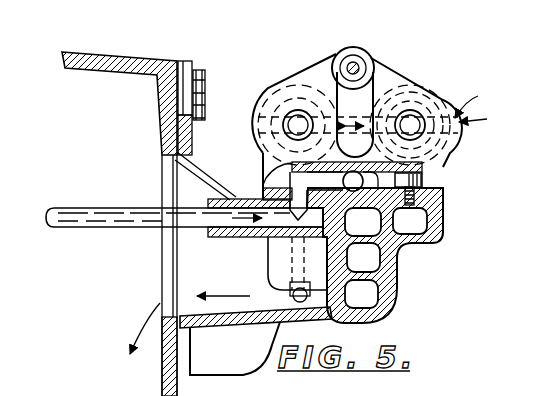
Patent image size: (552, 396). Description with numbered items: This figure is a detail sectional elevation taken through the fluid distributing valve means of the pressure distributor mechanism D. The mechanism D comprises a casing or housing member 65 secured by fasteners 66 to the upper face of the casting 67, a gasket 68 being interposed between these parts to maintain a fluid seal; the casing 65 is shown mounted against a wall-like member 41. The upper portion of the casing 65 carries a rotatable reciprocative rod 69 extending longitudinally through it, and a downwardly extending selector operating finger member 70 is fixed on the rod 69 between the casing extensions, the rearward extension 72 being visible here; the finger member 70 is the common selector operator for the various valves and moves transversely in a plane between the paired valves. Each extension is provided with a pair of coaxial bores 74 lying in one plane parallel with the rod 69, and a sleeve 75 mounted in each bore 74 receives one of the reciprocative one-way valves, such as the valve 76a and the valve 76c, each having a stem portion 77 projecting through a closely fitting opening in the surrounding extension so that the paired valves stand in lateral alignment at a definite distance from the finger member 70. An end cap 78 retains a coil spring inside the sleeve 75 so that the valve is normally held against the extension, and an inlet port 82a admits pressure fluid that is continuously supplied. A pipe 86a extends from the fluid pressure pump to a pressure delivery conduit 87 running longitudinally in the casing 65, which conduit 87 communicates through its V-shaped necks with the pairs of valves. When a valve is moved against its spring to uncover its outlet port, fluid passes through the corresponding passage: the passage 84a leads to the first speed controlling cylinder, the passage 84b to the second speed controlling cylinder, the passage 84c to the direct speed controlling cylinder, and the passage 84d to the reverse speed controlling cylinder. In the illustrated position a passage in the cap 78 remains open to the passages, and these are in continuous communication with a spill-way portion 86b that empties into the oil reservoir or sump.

The wall bracket 41 is at (138, 58).
The pipe 86a is at (268, 153).
The rearward extension 72 is at (382, 70).
The rotatable reciprocative rod 69 is at (353, 64).
The selector operating finger member 70 is at (340, 62).
The stem portion 77 is at (300, 112).
The reciprocative one-way valve 76a is at (288, 127).
The end cap 78 is at (283, 90).
The coaxial bores 74 is at (260, 117).
The sleeve 75 is at (458, 148).
The reciprocative one-way valve 76c is at (420, 118).
The right disc circle 82a is at (408, 82).
The pressure distributor mechanism D is at (473, 102).
The casing 65 is at (482, 115).
The pressure delivery conduit 87 is at (358, 180).
The passage 84b is at (345, 214).
The fasteners 66 is at (425, 182).
The gasket 68 is at (428, 198).
The casting 67 is at (364, 255).
The passage 84c is at (440, 236).
The passage 84a is at (348, 258).
The passage 84d is at (398, 292).
The spill-way portion 86b is at (264, 322).